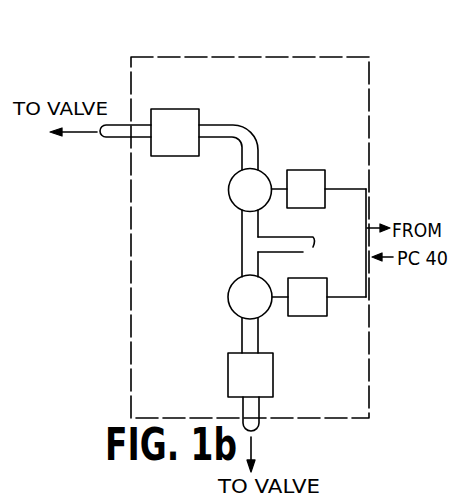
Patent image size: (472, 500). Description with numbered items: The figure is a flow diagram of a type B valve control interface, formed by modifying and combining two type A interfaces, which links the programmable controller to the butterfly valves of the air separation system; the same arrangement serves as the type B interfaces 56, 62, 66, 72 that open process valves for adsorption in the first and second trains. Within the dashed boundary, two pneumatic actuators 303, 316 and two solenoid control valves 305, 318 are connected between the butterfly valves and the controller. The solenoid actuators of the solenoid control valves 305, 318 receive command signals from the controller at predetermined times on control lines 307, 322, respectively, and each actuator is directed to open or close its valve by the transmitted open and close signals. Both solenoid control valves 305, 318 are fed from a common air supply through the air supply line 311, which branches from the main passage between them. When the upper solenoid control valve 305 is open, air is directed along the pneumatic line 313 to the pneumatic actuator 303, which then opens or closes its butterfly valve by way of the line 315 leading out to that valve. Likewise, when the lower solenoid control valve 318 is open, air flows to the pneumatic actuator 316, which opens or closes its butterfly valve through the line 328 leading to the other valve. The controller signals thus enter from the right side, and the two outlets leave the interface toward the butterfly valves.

The type B interface 56 is at (250, 216).
The type B interface 62 is at (250, 216).
The type B interface 66 is at (250, 216).
The type B interface 72 is at (173, 57).
The pneumatic actuator 303 is at (167, 109).
The solenoid control valve 305 is at (228, 187).
The control line 307 is at (343, 191).
The air supply line 311 is at (303, 252).
The pneumatic line 313 is at (247, 127).
The line 315 is at (113, 140).
The pneumatic actuator 316 is at (274, 378).
The solenoid control valve 318 is at (228, 295).
The control line 322 is at (334, 297).
The line 328 is at (243, 407).